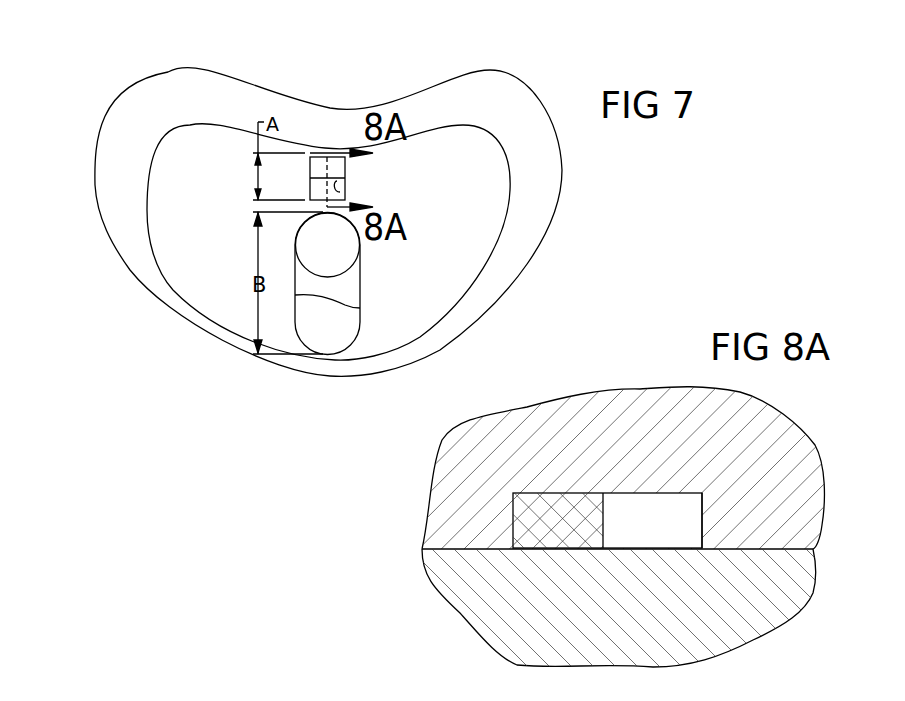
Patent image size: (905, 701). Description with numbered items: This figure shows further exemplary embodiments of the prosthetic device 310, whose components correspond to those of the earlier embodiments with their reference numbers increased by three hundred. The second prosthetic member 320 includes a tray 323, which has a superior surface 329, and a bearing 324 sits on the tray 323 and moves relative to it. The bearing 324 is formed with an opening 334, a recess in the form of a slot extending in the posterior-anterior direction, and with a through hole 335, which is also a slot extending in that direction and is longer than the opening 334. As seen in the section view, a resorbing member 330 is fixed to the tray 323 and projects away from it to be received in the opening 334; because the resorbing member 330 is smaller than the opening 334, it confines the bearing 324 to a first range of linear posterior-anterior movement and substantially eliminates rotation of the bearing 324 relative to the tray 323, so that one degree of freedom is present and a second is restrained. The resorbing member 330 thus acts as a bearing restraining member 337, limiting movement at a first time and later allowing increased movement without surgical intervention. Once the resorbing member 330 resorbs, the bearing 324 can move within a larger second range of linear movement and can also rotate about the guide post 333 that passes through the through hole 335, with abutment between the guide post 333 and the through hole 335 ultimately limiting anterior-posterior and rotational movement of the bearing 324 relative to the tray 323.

In FIG. 7, the prosthetic device 310 is at (115, 76).
In FIG. 7, the second prosthetic member 320 is at (132, 250).
In FIG. 8A, the second prosthetic member 320 is at (477, 597).
In FIG. 7, the tray 323 is at (158, 278).
In FIG. 8A, the tray 323 is at (518, 622).
In FIG. 7, the bearing 324 is at (157, 165).
In FIG. 8A, the bearing 324 is at (502, 447).
In FIG. 7, the superior surface 329 is at (184, 110).
In FIG. 7, the resorbing member 330 is at (337, 163).
In FIG. 8A, the resorbing member 330 is at (583, 527).
In FIG. 7, the guide post 333 is at (350, 270).
In FIG. 7, the opening 334 is at (340, 192).
In FIG. 8A, the opening 334 is at (700, 520).
In FIG. 7, the through hole 335 is at (358, 306).
In FIG. 8A, the bearing restraining member 337 is at (552, 493).